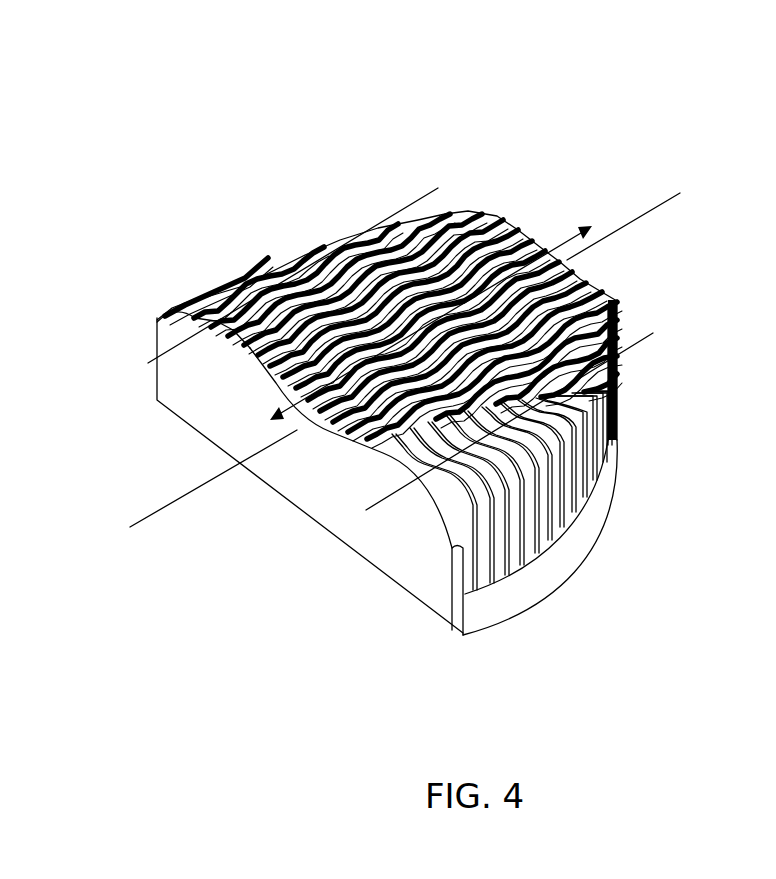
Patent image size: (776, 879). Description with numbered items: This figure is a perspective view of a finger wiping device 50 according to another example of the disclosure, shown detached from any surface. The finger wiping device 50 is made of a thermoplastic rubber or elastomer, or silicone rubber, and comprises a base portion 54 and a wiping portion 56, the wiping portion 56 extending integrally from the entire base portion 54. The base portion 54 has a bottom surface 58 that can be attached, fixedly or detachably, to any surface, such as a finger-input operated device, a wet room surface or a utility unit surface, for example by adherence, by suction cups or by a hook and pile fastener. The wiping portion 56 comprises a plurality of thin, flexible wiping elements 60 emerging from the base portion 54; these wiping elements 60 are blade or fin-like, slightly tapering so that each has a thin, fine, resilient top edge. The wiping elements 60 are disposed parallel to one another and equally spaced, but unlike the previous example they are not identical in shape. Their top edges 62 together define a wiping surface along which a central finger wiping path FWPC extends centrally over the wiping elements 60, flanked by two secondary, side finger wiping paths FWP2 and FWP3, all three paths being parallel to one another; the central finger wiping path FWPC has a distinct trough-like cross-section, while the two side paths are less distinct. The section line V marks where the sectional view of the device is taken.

The finger wiping device 50 is at (277, 155).
The base portion 54 is at (550, 557).
The wiping portion 56 is at (617, 393).
The bottom surface 58 is at (190, 432).
The wiping elements 60 is at (500, 556).
The top edges 62 is at (602, 445).
The side finger wiping path FWP2 is at (417, 200).
The central finger wiping path FWPC is at (567, 241).
The side finger wiping path FWP3 is at (633, 345).
The section line V- V is at (645, 232).